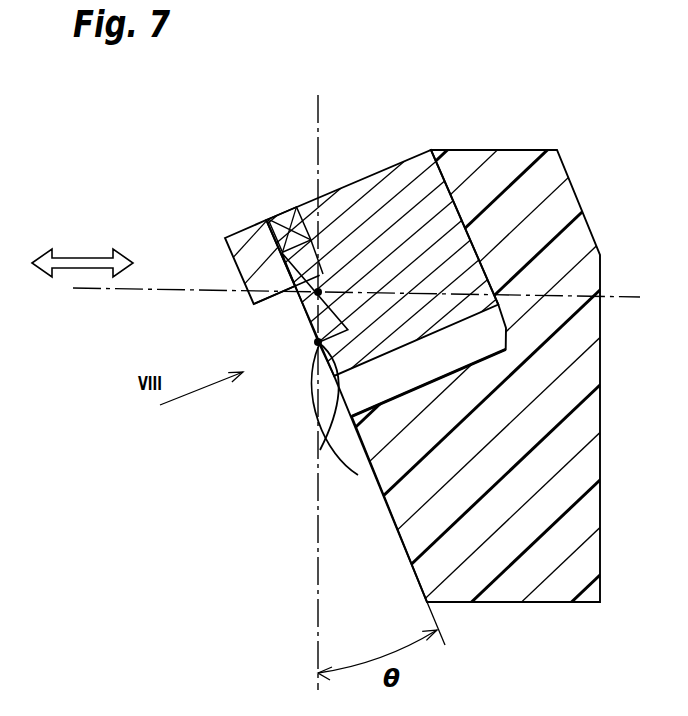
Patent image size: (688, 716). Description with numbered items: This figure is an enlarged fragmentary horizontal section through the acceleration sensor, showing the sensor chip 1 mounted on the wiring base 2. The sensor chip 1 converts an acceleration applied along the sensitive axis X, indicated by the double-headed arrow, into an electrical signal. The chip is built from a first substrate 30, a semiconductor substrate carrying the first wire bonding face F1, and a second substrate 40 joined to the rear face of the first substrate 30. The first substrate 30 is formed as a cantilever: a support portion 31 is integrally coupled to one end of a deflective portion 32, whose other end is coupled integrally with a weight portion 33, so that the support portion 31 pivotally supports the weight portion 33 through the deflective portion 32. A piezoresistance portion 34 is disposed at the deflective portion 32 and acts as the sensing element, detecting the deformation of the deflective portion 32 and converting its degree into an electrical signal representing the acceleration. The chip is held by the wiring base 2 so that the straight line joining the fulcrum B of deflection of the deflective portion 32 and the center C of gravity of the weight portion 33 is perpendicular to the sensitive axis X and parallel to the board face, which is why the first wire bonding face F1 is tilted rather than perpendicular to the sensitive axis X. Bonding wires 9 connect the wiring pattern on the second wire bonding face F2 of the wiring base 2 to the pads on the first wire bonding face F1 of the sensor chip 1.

The sensor chip 1 is at (385, 259).
The wiring base 2 is at (513, 603).
The bonding wires 9 is at (356, 476).
The first substrate 30 is at (275, 217).
The support portion 31 is at (348, 416).
The deflective portion 32 is at (313, 328).
The weight portion 33 is at (300, 215).
The piezoresistance portion 34 is at (308, 337).
The second substrate 40 is at (398, 193).
The fulcrum of deflection B is at (318, 342).
The center of gravity of the weight portion C is at (319, 292).
The first wire bonding face F1 is at (305, 298).
The second wire bonding face F2 is at (400, 562).
The sensitive axis X is at (82, 248).